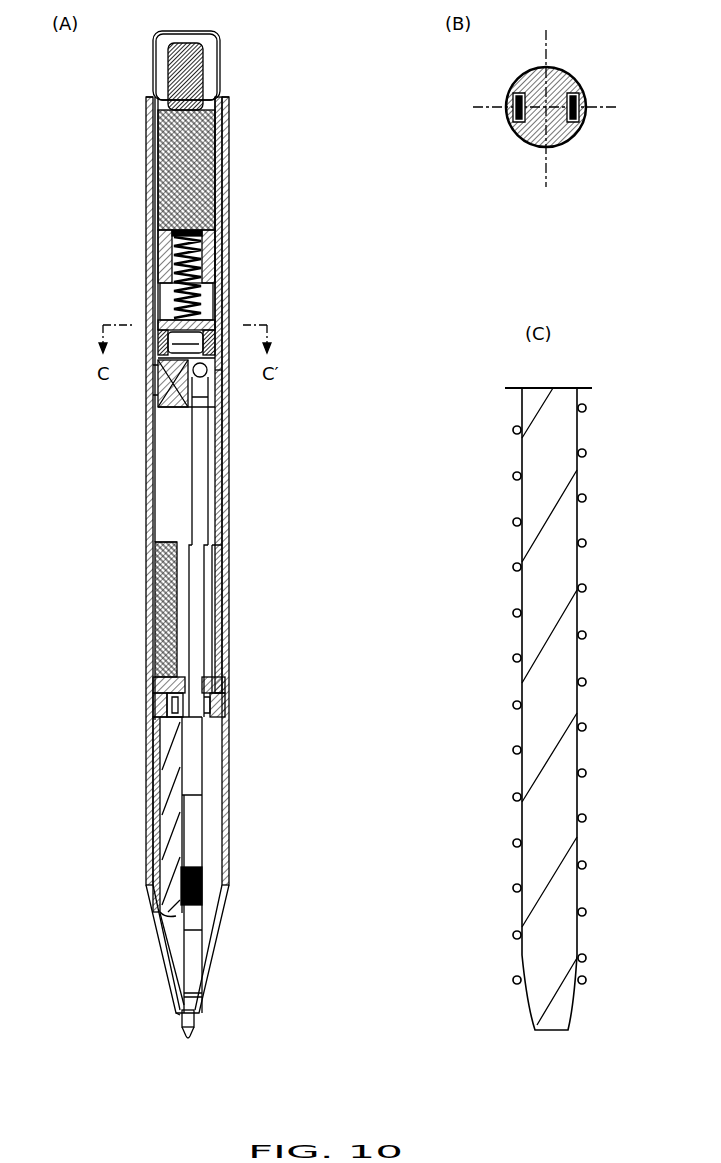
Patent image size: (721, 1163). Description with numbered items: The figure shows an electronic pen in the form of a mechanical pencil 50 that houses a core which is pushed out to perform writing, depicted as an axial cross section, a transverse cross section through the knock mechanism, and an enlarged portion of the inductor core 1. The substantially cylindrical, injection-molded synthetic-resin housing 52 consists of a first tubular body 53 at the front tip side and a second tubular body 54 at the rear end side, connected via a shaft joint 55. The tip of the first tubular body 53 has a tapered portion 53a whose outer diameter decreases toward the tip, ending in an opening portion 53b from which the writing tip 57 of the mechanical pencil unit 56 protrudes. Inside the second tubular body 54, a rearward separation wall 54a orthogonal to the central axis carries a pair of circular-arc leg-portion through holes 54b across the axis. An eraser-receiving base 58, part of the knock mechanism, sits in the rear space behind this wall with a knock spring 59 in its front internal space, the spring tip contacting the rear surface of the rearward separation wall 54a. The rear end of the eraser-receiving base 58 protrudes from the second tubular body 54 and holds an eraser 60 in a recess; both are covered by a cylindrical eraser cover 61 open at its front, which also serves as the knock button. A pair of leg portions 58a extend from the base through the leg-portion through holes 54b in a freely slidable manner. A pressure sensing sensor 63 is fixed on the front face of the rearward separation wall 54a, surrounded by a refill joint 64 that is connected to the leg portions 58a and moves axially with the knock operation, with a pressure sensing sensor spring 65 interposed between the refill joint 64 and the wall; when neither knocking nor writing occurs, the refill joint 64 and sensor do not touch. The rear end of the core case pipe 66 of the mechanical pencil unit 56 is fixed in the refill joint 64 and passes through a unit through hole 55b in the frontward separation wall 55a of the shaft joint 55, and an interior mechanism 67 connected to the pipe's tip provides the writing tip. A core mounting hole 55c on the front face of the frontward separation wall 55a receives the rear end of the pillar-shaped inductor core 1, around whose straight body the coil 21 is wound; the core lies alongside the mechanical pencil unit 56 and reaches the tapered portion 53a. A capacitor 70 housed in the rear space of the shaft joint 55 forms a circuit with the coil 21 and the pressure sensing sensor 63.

The mechanical pencil 50 is at (294, 86).
The inductor core 1 is at (166, 828).
The coil 21 is at (160, 793).
The housing 52 is at (70, 545).
The first tubular body 53 is at (155, 740).
The tapered portion 53a is at (221, 939).
The opening portion 53b is at (176, 1018).
The second tubular body 54 is at (157, 587).
The rearward separation wall 54a is at (530, 139).
The leg-portion through holes 54b is at (160, 300).
The shaft joint 55 is at (157, 665).
The frontward separation wall 55a is at (226, 700).
The unit through hole 55b is at (183, 743).
The core mounting hole 55c is at (163, 707).
The mechanical pencil unit 56 is at (291, 800).
The writing tip 57 is at (195, 1030).
The eraser-receiving base 58 is at (205, 158).
The leg portions 58a is at (152, 366).
The knock spring 59 is at (202, 305).
The eraser 60 is at (200, 58).
The eraser cover 61 is at (205, 34).
The pressure sensing sensor 63 is at (197, 392).
The refill joint 64 is at (170, 378).
The pressure sensing sensor spring 65 is at (215, 346).
The core case pipe 66 is at (197, 778).
The interior mechanism 67 is at (192, 838).
The capacitor 70 is at (163, 540).